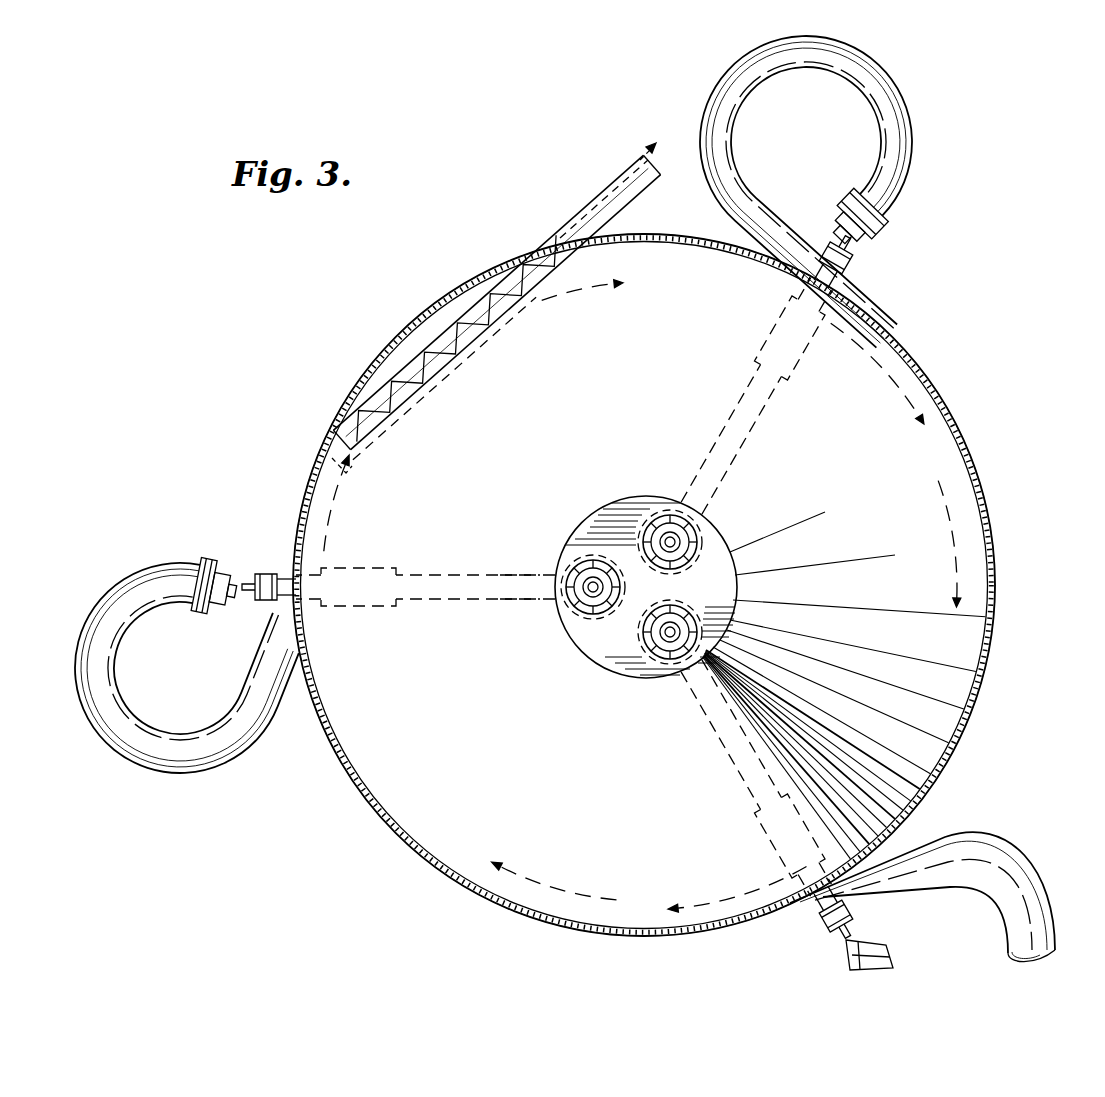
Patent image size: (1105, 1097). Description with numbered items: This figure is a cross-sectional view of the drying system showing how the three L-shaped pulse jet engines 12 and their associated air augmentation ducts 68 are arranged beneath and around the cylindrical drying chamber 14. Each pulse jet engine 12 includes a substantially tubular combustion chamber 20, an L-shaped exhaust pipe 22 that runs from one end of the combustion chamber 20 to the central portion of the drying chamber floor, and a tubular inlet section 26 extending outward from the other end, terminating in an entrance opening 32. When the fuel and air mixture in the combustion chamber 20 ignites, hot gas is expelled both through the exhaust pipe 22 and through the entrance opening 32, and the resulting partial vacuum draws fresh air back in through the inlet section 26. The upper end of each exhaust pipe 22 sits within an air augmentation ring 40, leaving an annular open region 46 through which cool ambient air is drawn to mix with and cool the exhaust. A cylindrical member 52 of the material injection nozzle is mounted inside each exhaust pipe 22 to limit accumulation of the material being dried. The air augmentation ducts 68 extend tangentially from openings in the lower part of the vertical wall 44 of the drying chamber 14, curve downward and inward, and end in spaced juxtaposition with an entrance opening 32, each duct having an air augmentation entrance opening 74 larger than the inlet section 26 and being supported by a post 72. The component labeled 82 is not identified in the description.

The pulse jet engine 12 is at (448, 572).
The drying chamber 14 is at (962, 642).
The combustion chamber 20 is at (360, 568).
The exhaust pipe 22 is at (498, 602).
The inlet section 26 is at (276, 576).
The entrance opening 32 is at (252, 600).
The air augmentation ring 40 is at (592, 518).
The vertical wall 44 is at (1000, 497).
The annular open region 46 is at (586, 580).
The cylindrical member 52 is at (590, 598).
The air augmentation duct 68 is at (906, 108).
The post 72 is at (898, 196).
The air augmentation entrance opening 74 is at (866, 228).
The auger feeder 82 is at (458, 326).